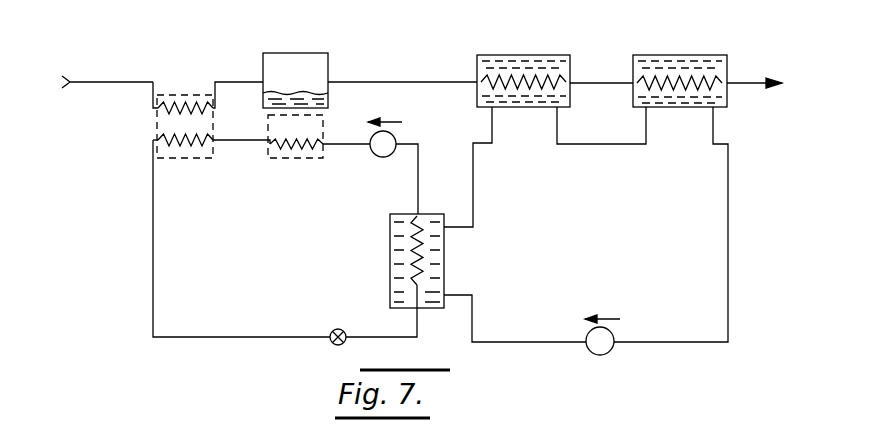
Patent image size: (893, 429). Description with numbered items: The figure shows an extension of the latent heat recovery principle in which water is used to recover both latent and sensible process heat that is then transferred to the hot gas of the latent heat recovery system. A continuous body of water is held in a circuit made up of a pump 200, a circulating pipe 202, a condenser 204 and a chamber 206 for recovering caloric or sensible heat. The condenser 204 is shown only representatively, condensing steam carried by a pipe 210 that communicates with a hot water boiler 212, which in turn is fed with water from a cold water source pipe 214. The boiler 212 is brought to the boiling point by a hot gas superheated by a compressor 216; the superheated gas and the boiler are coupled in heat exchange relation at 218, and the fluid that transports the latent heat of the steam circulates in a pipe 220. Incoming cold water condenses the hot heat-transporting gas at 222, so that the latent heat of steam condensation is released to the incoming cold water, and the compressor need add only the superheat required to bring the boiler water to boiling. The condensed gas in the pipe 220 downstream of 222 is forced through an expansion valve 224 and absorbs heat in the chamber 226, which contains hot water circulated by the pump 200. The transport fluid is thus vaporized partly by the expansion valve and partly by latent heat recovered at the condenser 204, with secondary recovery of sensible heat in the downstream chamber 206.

The pump 200 is at (596, 355).
The circulating pipe 202 is at (475, 188).
The condenser 204 is at (497, 108).
The chamber for recovering sensible heat 206 is at (654, 110).
The pipe 210 is at (455, 66).
The hot water boiler 212 is at (330, 60).
The cold water source pipe 214 is at (118, 74).
The compressor 216 is at (377, 158).
The heat exchange coupling 218 is at (267, 117).
The pipe 220 is at (152, 204).
The condenser for transport gas 222 is at (166, 84).
The expansion valve 224 is at (339, 326).
The chamber 226 is at (447, 263).